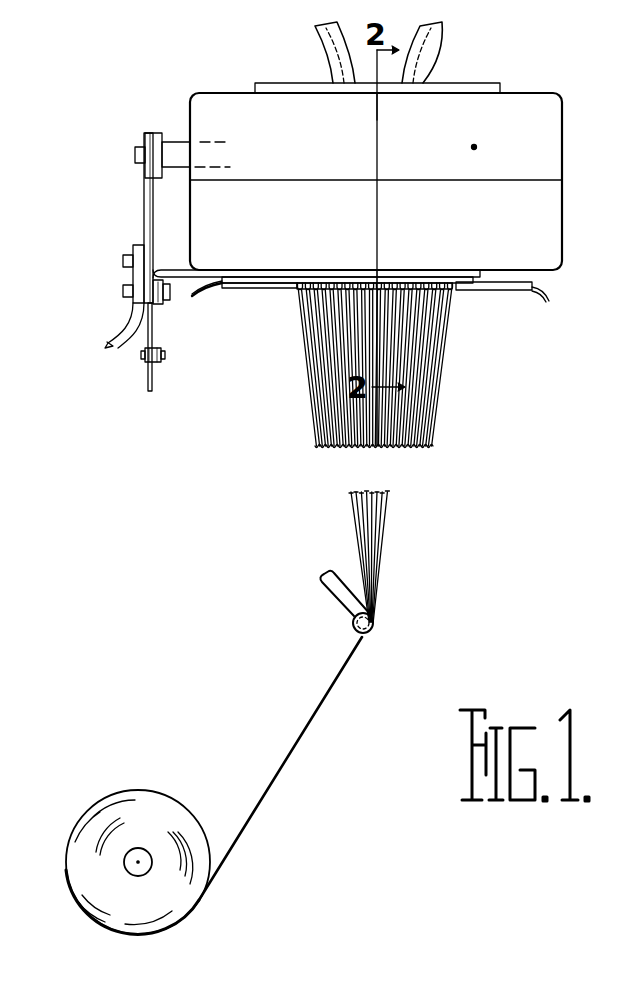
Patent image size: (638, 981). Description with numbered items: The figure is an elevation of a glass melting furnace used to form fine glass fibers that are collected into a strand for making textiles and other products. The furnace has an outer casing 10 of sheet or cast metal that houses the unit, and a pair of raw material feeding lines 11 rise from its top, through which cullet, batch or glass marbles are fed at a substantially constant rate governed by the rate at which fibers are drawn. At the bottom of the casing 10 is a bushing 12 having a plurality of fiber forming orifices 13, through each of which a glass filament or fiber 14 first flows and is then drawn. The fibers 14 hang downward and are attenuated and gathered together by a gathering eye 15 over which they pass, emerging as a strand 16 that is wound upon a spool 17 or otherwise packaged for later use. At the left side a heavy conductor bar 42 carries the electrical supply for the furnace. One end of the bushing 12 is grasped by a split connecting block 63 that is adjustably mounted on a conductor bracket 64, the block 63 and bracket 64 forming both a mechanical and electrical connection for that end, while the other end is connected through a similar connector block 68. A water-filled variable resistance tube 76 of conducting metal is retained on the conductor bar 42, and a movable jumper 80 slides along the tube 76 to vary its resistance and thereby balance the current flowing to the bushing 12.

The outer casing 10 is at (563, 228).
The raw material feeding lines 11 is at (331, 46).
The bushing 12 is at (455, 292).
The fiber forming orifices 13 is at (297, 289).
The glass filament or fiber 14 is at (430, 382).
The gathering eye 15 is at (376, 626).
The strand 16 is at (298, 752).
The spool 17 is at (129, 862).
The conductor bar 42 is at (143, 208).
The split connecting block 63 is at (222, 290).
The conductor bracket 64 is at (176, 284).
The connector block 68 is at (505, 290).
The variable resistance tube 76 is at (153, 340).
The movable jumper 80 is at (162, 367).